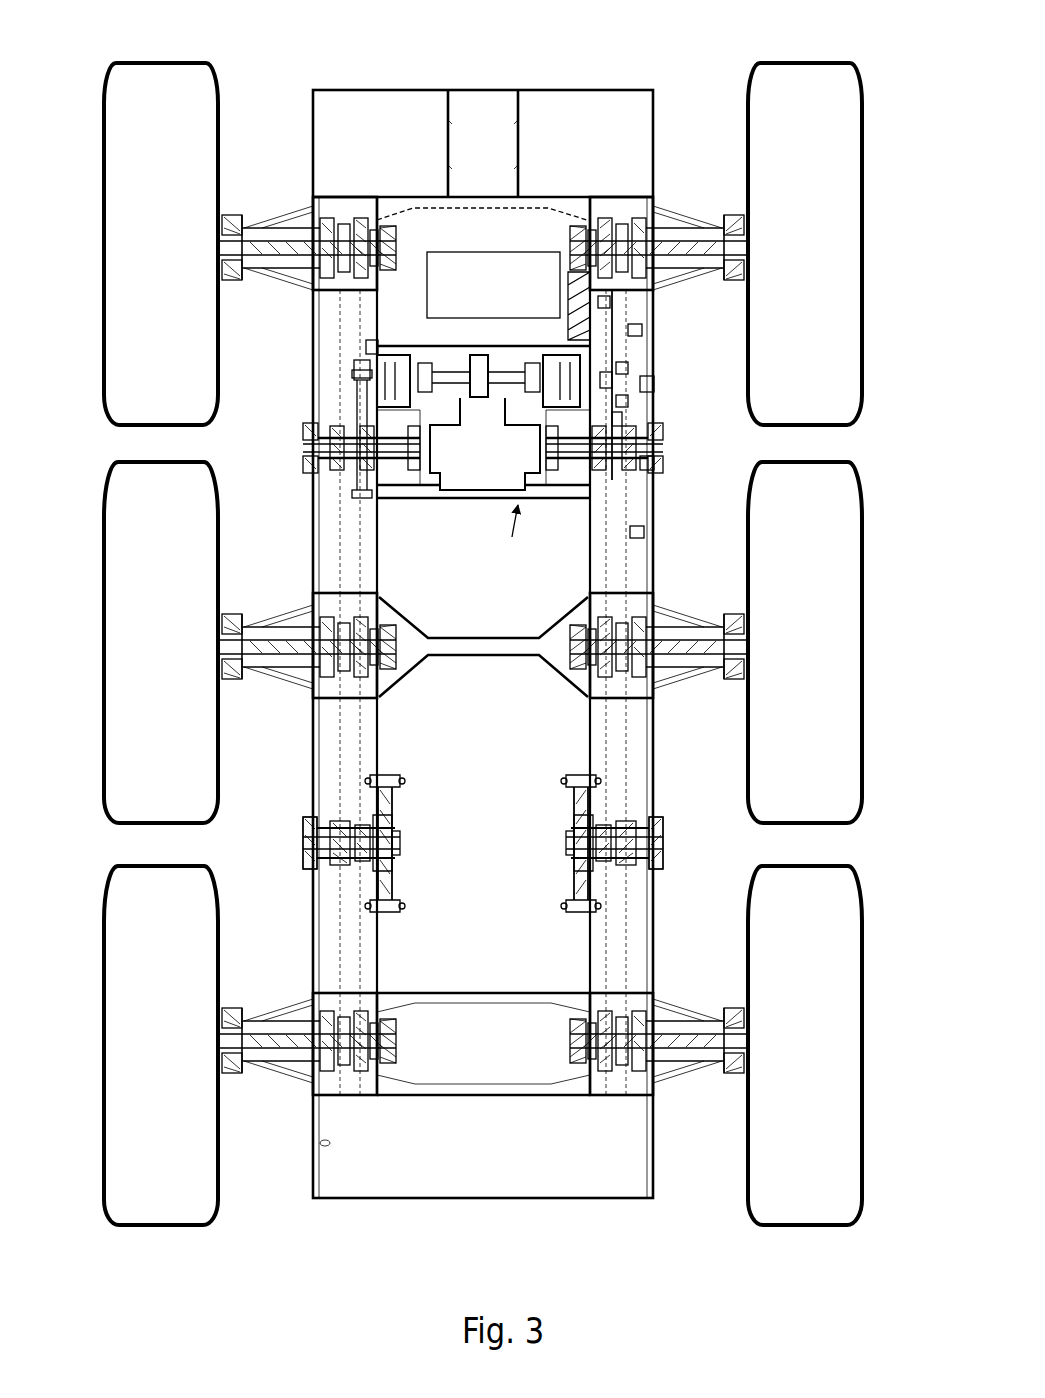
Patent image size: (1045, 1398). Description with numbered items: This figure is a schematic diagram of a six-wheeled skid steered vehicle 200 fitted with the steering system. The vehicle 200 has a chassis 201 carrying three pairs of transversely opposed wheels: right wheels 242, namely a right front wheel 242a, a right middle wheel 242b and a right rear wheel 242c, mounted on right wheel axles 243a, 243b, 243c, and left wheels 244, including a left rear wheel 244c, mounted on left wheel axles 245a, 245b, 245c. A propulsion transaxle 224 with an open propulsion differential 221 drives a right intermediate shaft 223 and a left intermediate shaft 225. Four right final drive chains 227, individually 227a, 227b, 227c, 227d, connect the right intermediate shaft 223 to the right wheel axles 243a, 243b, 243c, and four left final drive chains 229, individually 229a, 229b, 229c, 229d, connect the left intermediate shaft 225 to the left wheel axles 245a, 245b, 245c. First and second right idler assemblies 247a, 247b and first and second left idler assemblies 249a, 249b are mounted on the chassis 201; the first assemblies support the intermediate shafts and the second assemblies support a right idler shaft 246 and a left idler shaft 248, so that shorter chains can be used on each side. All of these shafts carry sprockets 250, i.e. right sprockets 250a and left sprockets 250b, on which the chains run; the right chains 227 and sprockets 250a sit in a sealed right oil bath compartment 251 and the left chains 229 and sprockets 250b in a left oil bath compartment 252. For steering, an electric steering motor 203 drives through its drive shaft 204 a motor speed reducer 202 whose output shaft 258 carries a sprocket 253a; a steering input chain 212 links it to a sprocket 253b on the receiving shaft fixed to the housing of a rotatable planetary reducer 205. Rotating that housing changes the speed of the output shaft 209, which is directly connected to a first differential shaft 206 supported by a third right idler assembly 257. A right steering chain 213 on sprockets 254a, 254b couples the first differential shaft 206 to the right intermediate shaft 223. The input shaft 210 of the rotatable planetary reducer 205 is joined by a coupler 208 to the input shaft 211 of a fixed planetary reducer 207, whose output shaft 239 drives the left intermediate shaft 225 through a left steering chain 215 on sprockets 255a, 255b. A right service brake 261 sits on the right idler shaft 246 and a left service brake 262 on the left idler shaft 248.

The six-wheeled skid steered vehicle 200 is at (410, 84).
The chassis 201 is at (548, 90).
The motor speed reducer 202 is at (598, 290).
The electric steering motor 203 is at (462, 262).
The drive shaft 204 is at (558, 252).
The rotatable planetary reducer 205 is at (560, 375).
The first differential shaft 206 is at (612, 380).
The fixed planetary reducer 207 is at (366, 352).
The coupler 208 is at (442, 352).
The output shaft 209 is at (622, 418).
The input shaft 210 is at (512, 373).
The input shaft 211 is at (443, 377).
The steering input chain 212 is at (620, 347).
The right steering chain 213 is at (654, 464).
The left steering chain 215 is at (358, 400).
The open propulsion differential 221 is at (485, 462).
The right intermediate shaft 223 is at (540, 470).
The propulsion transaxle 224 is at (493, 535).
The left intermediate shaft 225 is at (395, 494).
The right final drive chains 227 is at (766, 646).
The right final drive chain 227a is at (700, 345).
The right final drive chain 227b is at (615, 535).
The right final drive chain 227c is at (645, 766).
The right final drive chain 227d is at (648, 1002).
The left final drive chains 229 is at (219, 646).
The left final drive chain 229a is at (325, 440).
The left final drive chain 229b is at (316, 602).
The left final drive chain 229c is at (322, 766).
The left final drive chain 229d is at (318, 1002).
The output shaft 239 is at (356, 376).
The right wheels 242 is at (849, 648).
The right front wheel 242a is at (795, 84).
The right middle wheel 242b is at (835, 794).
The right rear wheel 242c is at (797, 1216).
The right wheel axle 243a is at (705, 242).
The right wheel axle 243b is at (700, 650).
The right wheel axle 243c is at (698, 1052).
The left wheels 244 is at (124, 648).
The left rear wheel 244c is at (132, 1246).
The left wheel axle 245a is at (262, 242).
The left wheel axle 245b is at (272, 650).
The left wheel axle 245c is at (272, 1052).
The right idler shaft 246 is at (664, 843).
The first right idler assembly 247a is at (640, 470).
The second right idler assembly 247b is at (662, 866).
The left idler shaft 248 is at (302, 843).
The first left idler assembly 249a is at (303, 453).
The second left idler assembly 249b is at (304, 868).
The sprockets 250 is at (484, 647).
The right sprockets 250a is at (666, 1140).
The left sprockets 250b is at (298, 1160).
The right oil bath compartment 251 is at (572, 778).
The left oil bath compartment 252 is at (394, 778).
The sprocket 253a is at (642, 330).
The sprocket 253b is at (628, 368).
The sprocket 254a is at (628, 400).
The sprocket 254b is at (644, 538).
The sprocket 255a is at (355, 372).
The sprocket 255b is at (357, 498).
The third right idler assembly 257 is at (654, 386).
The output shaft 258 is at (612, 303).
The right service brake 261 is at (574, 904).
The left service brake 262 is at (392, 904).